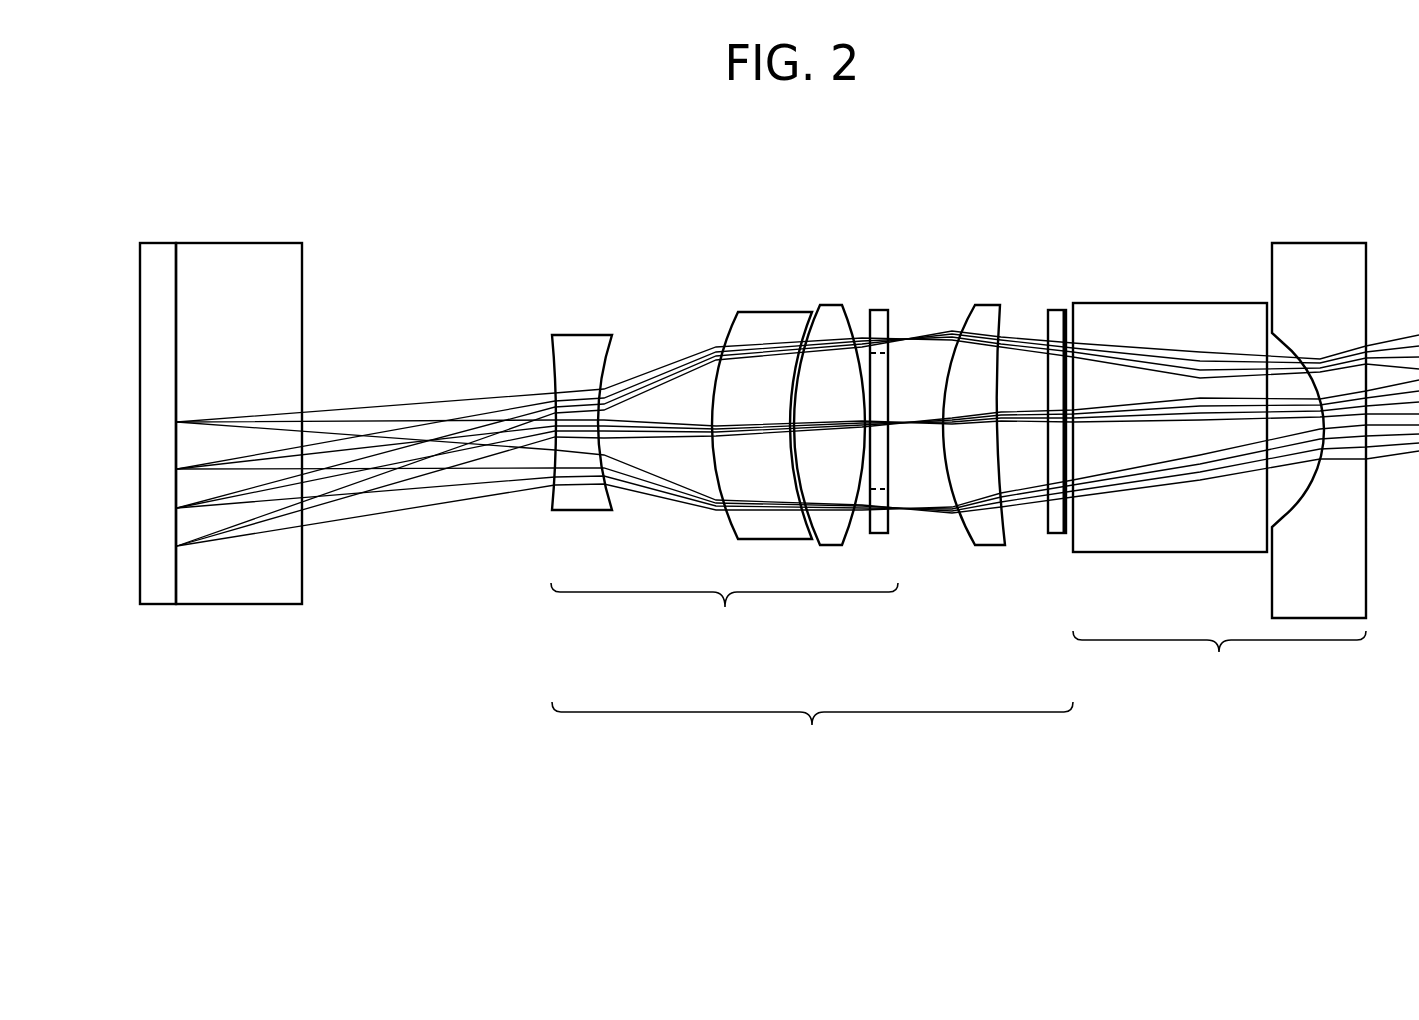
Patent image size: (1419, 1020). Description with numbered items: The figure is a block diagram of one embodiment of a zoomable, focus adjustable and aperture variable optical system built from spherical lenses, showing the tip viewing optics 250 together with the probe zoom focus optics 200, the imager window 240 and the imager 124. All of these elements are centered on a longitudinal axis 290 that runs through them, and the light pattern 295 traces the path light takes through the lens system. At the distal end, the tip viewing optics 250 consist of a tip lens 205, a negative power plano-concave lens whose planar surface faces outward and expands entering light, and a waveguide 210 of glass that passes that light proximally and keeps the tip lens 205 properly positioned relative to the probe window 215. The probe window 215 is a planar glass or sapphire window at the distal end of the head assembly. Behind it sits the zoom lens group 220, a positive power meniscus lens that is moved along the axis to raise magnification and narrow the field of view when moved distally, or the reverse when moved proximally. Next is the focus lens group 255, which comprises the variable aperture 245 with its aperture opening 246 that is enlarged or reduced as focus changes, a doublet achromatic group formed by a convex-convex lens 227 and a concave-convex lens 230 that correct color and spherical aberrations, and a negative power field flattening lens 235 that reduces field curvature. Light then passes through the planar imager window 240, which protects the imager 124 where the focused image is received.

The imager 124 is at (160, 242).
The imager window 240 is at (255, 242).
The longitudinal axis 290 is at (349, 409).
The light pattern 295 is at (412, 512).
The field flattening lens 235 is at (586, 333).
The concave-convex lens 230 is at (757, 310).
The convex-convex lens 227 is at (833, 303).
The variable aperture 245 is at (883, 308).
The aperture opening 246 is at (893, 458).
The zoom lens group 220 is at (997, 303).
The probe window 215 is at (1062, 308).
The waveguide 210 is at (1162, 301).
The tip lens 205 is at (1322, 241).
The focus lens group 255 is at (724, 611).
The tip viewing optics 250 is at (1219, 659).
The probe zoom focus optics 200 is at (812, 732).